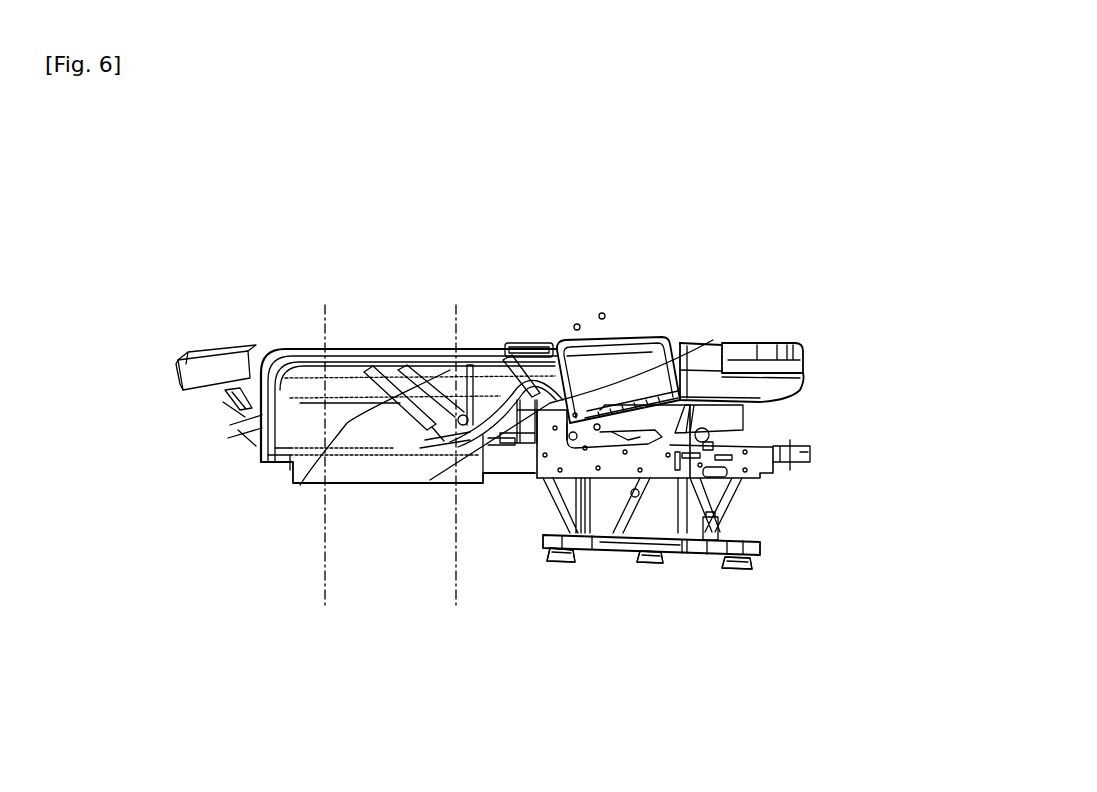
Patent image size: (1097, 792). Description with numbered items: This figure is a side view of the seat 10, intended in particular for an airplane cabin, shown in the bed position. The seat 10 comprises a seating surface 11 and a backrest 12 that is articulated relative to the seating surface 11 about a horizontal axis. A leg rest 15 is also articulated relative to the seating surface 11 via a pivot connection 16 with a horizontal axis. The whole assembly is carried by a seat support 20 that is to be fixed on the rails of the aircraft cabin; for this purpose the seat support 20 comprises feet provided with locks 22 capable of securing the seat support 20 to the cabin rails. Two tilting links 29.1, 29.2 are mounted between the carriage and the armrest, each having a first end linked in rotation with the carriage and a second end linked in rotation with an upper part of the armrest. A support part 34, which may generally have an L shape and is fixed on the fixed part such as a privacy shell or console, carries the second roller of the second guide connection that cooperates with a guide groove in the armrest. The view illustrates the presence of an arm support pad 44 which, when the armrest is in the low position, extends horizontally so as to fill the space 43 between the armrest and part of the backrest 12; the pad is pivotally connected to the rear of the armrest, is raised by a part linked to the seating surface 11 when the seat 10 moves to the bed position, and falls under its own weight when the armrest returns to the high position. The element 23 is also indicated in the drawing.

The seat 10 is at (785, 203).
The seating surface 11 is at (353, 344).
The backrest 12 is at (640, 345).
The leg rest 15 is at (205, 368).
The pivot connection 16 is at (268, 344).
The seat support 20 is at (737, 473).
The locks 22 is at (561, 567).
The link 23 is at (479, 377).
The tilting link 29.1 is at (300, 485).
The tilting link 29.2 is at (415, 380).
The support part 34 is at (713, 340).
The space 43 is at (551, 345).
The arm support pad 44 is at (528, 357).